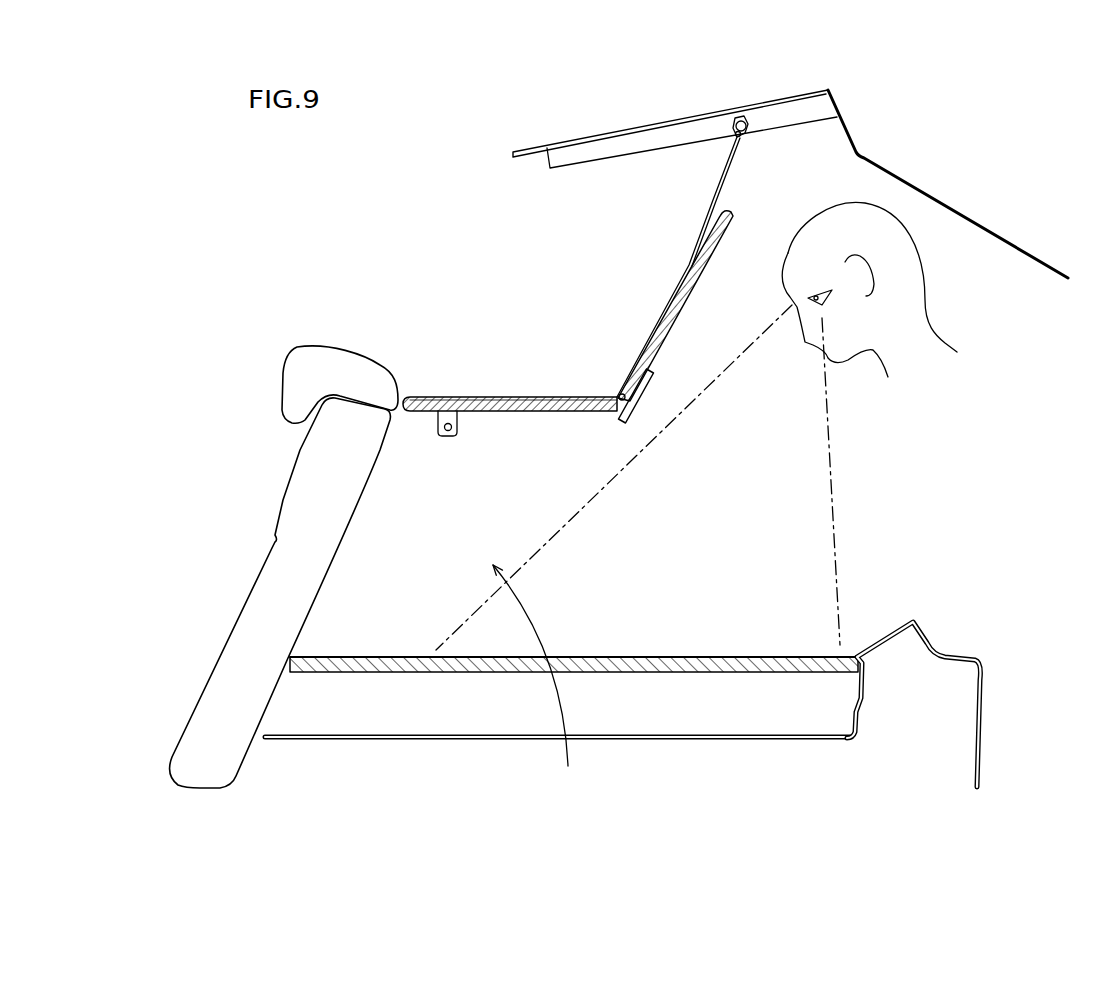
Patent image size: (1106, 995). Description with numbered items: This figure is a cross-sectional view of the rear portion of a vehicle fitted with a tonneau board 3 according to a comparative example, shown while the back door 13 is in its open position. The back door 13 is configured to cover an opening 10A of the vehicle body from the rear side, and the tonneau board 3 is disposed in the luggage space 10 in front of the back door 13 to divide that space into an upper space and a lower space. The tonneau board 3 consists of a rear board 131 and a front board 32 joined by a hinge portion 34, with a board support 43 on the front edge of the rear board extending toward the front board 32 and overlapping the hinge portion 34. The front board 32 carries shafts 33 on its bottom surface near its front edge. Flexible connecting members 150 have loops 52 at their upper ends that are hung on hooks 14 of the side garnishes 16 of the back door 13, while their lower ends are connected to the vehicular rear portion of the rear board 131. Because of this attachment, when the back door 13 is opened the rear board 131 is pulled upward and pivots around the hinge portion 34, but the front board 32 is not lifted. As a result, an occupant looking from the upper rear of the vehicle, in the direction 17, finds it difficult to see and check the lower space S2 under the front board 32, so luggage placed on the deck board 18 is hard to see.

The tonneau board 3 is at (437, 378).
The luggage space 10 is at (840, 518).
The opening 10A is at (887, 637).
The back door 13 is at (865, 123).
The hook 14 is at (733, 116).
The side garnish 16 is at (597, 148).
The vehicle upward direction 17 is at (998, 271).
The deck board 18 is at (735, 656).
The front board 32 is at (540, 411).
The shaft 33 is at (452, 433).
The hinge portion 34 is at (618, 395).
The board support 43 is at (643, 398).
The loop 52 is at (742, 134).
The rear board 131 is at (692, 294).
The connecting member 150 is at (740, 184).
The lower space S2 is at (538, 680).